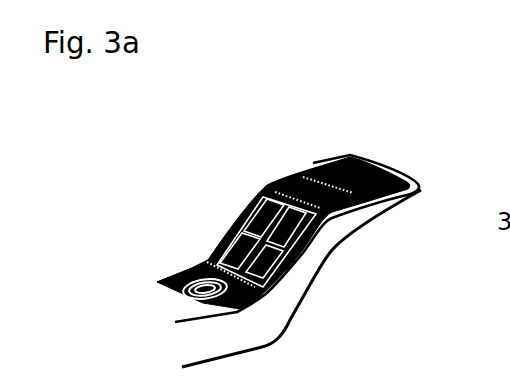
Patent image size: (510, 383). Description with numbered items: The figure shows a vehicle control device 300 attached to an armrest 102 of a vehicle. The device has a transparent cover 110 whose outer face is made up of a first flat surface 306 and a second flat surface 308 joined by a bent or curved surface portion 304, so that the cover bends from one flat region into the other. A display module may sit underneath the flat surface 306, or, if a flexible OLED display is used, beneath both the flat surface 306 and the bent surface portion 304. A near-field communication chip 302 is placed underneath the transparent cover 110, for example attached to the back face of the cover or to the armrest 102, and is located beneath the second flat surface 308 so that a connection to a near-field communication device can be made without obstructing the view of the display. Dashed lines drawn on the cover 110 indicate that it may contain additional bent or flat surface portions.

The vehicle control device 300 is at (228, 118).
The transparent cover 110 is at (258, 172).
The flat surface 306 is at (236, 229).
The bent or curved surface portion 304 is at (205, 265).
The second flat surface 308 is at (172, 277).
The near-field communication chip 302 is at (184, 293).
The armrest 102 is at (307, 260).